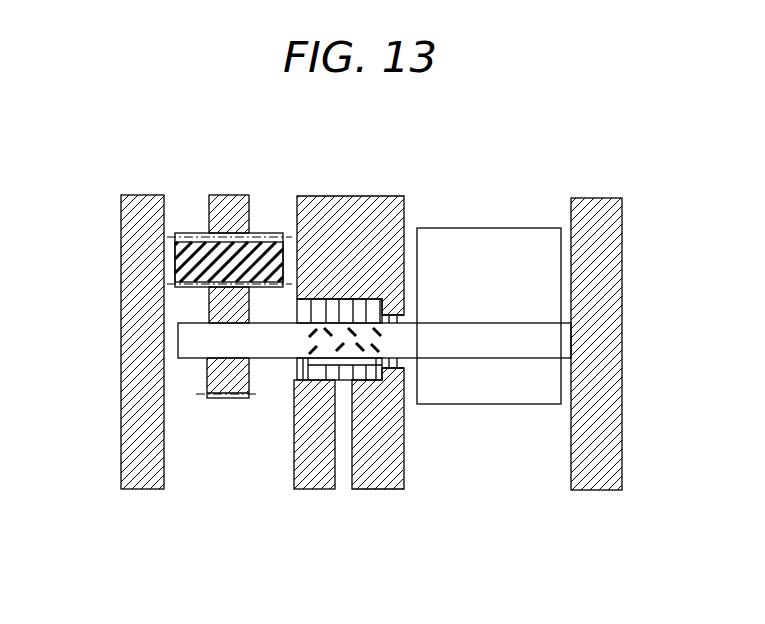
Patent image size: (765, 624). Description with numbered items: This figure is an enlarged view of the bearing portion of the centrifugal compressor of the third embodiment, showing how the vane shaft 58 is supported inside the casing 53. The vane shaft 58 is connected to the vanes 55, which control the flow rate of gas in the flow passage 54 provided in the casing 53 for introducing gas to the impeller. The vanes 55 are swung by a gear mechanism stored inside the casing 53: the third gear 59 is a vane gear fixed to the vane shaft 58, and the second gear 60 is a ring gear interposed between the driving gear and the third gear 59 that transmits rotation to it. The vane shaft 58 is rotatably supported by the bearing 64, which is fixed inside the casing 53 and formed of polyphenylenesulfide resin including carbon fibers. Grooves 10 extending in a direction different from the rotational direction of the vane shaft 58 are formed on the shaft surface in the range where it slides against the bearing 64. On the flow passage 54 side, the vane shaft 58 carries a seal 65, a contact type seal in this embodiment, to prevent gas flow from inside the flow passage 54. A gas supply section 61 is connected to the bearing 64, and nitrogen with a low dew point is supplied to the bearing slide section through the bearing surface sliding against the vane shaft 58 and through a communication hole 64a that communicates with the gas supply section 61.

The grooves 10 is at (363, 322).
The casing 53 is at (329, 215).
The flow passage 54 is at (418, 215).
The vanes 55 is at (495, 245).
The vane shaft 58 is at (493, 348).
The third gear 59 is at (228, 380).
The second gear 60 is at (175, 266).
The gas supply section 61 is at (345, 475).
The bearing 64 is at (300, 385).
The communication hole 64a is at (318, 373).
The seal 65 is at (388, 370).